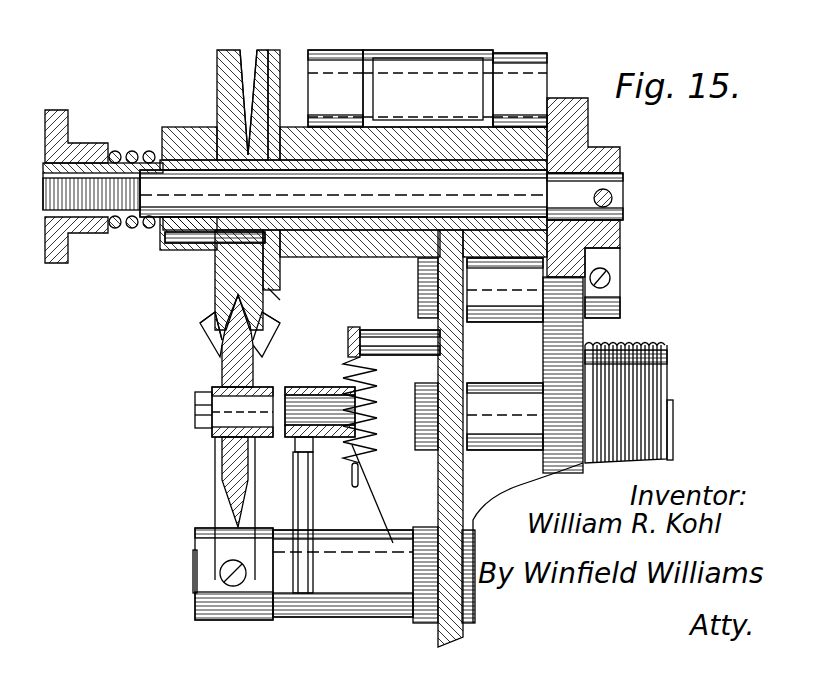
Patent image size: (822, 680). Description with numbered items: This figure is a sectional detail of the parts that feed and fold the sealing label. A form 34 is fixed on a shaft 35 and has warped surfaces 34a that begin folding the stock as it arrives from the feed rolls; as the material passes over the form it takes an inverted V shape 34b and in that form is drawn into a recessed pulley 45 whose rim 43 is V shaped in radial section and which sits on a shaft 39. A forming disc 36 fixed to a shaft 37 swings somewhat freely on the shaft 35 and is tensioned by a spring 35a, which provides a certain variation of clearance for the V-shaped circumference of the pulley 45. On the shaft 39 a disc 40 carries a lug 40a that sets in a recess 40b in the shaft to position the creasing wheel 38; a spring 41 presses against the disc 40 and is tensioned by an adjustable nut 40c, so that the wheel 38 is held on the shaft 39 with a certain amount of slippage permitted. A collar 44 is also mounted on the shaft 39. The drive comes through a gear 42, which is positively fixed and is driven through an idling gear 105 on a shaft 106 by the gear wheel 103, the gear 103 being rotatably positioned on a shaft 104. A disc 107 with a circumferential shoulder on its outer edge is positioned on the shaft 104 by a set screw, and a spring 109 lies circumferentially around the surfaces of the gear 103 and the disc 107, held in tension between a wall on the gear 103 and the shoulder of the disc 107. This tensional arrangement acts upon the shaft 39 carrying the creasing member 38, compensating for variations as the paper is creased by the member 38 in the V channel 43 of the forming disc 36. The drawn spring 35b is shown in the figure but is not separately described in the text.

The form 34 is at (272, 345).
The warped surfaces 34a is at (203, 317).
The inverted V shape 34b is at (218, 312).
The shaft 35 is at (195, 577).
The spring 35a is at (302, 500).
The spring 35b is at (372, 408).
The forming disc 36 is at (222, 370).
The shaft 37 is at (193, 427).
The creasing member 38 is at (217, 78).
The shaft 39 is at (215, 190).
The disc 40 is at (163, 233).
The lug 40a is at (158, 157).
The recess 40b is at (128, 152).
The adjustable nut 40c is at (43, 150).
The spring 41 is at (135, 228).
The gear 42 is at (620, 162).
The V-shaped rim 43 is at (246, 68).
The collar 44 is at (272, 240).
The recessed pulley 45 is at (233, 517).
The gear wheel 103 is at (583, 336).
The shaft 104 is at (674, 430).
The idling gear 105 is at (563, 305).
The shaft 106 is at (626, 272).
The disc 107 is at (667, 380).
The spring 109 is at (666, 332).